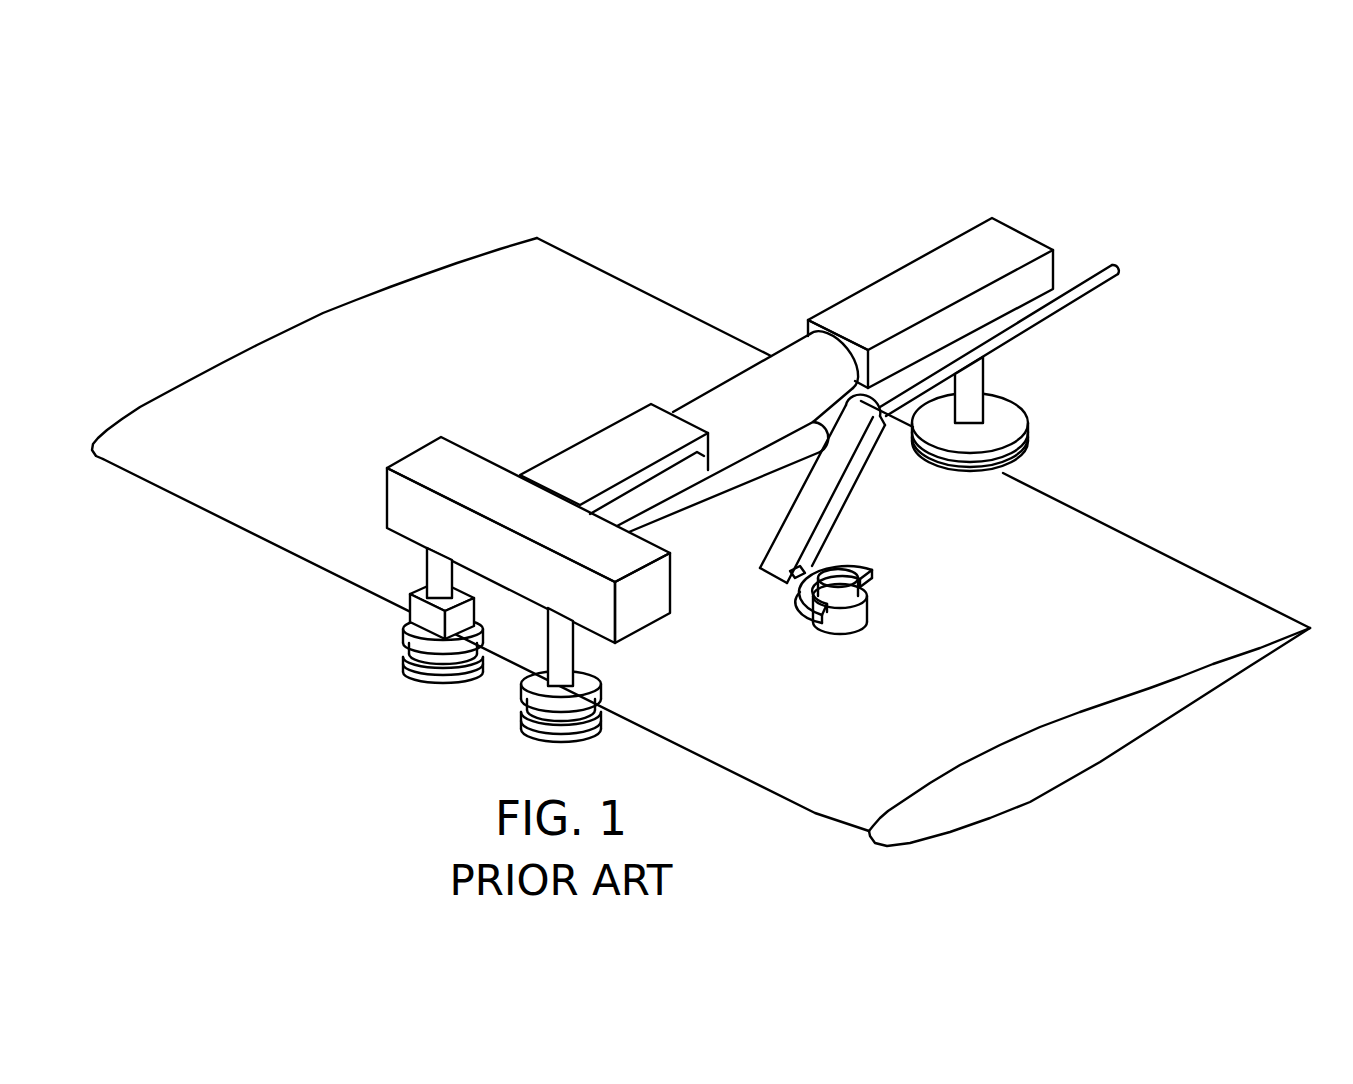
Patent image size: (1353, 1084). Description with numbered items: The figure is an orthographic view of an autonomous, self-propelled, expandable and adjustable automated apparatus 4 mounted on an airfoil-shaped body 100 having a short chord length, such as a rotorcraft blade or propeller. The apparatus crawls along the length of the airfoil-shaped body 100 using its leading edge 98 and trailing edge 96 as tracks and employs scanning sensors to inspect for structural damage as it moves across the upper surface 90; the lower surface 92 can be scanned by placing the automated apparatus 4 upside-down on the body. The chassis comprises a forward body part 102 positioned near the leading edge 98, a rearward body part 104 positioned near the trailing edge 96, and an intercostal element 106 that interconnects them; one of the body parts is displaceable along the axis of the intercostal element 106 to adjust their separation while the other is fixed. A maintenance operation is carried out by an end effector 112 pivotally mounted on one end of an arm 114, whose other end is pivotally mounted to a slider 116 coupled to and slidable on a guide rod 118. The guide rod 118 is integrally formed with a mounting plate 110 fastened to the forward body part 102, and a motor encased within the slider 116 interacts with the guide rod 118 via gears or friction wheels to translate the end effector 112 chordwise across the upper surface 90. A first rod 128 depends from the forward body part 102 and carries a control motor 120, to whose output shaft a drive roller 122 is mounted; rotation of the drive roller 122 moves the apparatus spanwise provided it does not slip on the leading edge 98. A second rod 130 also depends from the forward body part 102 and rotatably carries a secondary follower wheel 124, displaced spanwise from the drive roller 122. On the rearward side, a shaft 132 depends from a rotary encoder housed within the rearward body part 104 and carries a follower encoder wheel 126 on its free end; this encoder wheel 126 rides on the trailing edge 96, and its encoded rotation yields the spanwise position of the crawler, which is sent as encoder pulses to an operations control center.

The automated apparatus 4 is at (742, 175).
The upper surface 90 is at (1142, 667).
The lower surface 92 is at (1032, 793).
The trailing edge 96 is at (578, 260).
The leading edge 98 is at (252, 533).
The airfoil-shaped body 100 is at (392, 285).
The forward body part 102 is at (408, 510).
The rearward body part 104 is at (993, 247).
The intercostal element 106 is at (805, 370).
The mounting plate 110 is at (668, 485).
The end effector 112 is at (843, 620).
The arm 114 is at (830, 502).
The slider 116 is at (833, 413).
The guide rod 118 is at (1037, 313).
The control motor 120 is at (428, 604).
The drive roller 122 is at (420, 662).
The secondary follower wheel 124 is at (545, 718).
The follower encoder wheel 126 is at (1005, 433).
The first rod 128 is at (438, 570).
The second rod 130 is at (565, 657).
The shaft 132 is at (972, 382).